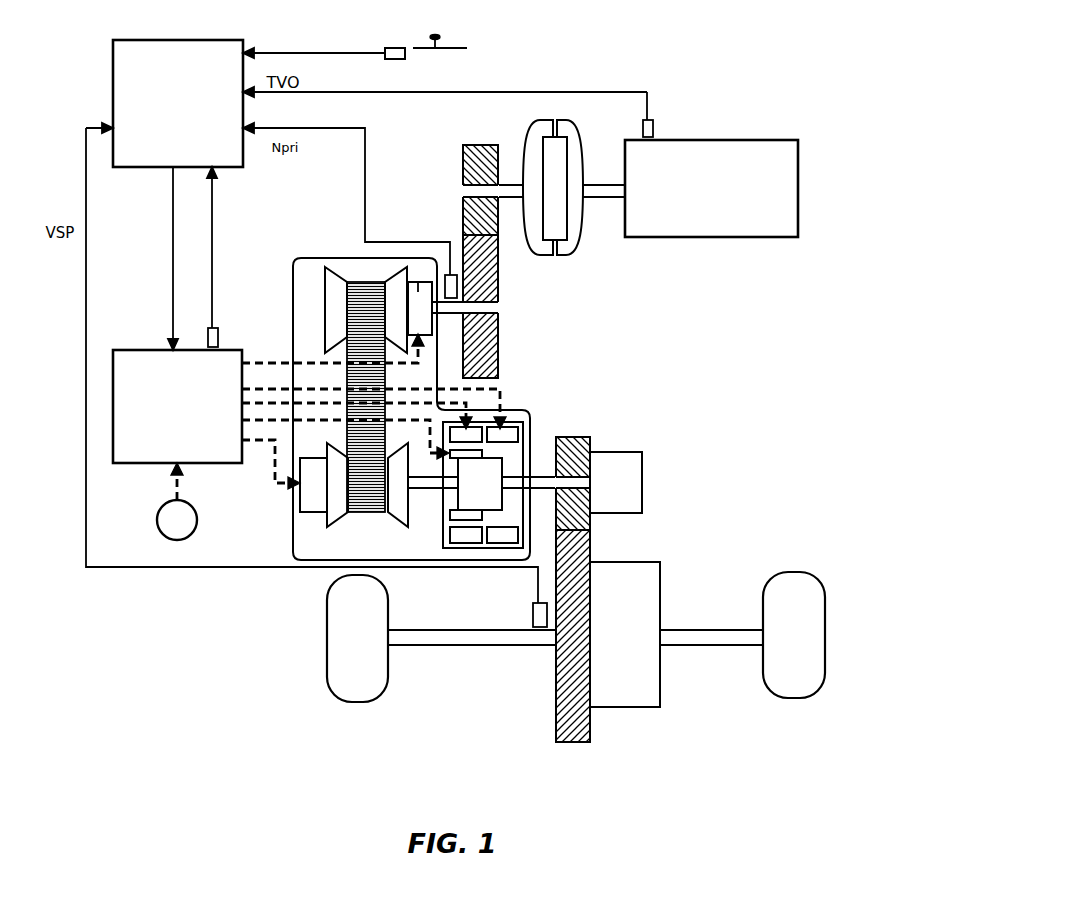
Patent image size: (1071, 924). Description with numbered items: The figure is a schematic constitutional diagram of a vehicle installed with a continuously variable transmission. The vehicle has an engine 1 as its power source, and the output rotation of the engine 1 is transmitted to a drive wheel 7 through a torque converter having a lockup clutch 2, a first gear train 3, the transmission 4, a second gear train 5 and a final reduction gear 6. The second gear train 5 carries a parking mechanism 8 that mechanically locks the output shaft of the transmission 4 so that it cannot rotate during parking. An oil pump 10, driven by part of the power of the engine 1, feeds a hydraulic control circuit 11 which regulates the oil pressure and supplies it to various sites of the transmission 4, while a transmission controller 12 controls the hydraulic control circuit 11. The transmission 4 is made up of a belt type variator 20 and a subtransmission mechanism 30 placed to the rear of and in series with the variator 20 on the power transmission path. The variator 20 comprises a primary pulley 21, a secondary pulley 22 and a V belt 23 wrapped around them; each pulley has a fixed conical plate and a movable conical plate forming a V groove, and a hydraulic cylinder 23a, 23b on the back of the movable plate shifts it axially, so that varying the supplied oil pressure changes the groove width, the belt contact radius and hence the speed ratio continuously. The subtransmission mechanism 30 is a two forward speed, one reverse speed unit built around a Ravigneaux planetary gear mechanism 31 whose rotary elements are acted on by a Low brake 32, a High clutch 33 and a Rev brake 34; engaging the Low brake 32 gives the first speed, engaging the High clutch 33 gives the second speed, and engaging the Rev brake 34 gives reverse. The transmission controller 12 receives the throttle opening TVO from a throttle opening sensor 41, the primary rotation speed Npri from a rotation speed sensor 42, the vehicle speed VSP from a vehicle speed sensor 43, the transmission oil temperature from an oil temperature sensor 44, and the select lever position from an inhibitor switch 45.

The engine 1 is at (783, 150).
The torque converter having a lockup clutch 2 is at (575, 148).
The first gear train 3 is at (483, 134).
The transmission 4 is at (355, 258).
The second gear train 5 is at (575, 755).
The final reduction gear 6 is at (625, 695).
The drive wheel 7 is at (357, 688).
The parking mechanism 8 is at (627, 475).
The oil pump 10 is at (162, 512).
The hydraulic control circuit 11 is at (133, 355).
The transmission controller 12 is at (228, 48).
The variator 20 is at (309, 282).
The primary pulley 21 is at (337, 308).
The secondary pulley 22 is at (320, 513).
The V belt 23 is at (367, 280).
The hydraulic cylinder 23a is at (417, 292).
The hydraulic cylinder 23b is at (302, 493).
The subtransmission mechanism 30 is at (506, 453).
The Ravigneaux planetary gear mechanism 31 is at (485, 480).
The Low brake 32 is at (468, 435).
The High clutch 33 is at (465, 517).
The Rev brake 34 is at (502, 437).
The throttle opening sensor 41 is at (653, 127).
The rotation speed sensor 42 is at (450, 287).
The vehicle speed sensor 43 is at (533, 612).
The oil temperature sensor 44 is at (218, 338).
The inhibitor switch 45 is at (392, 47).